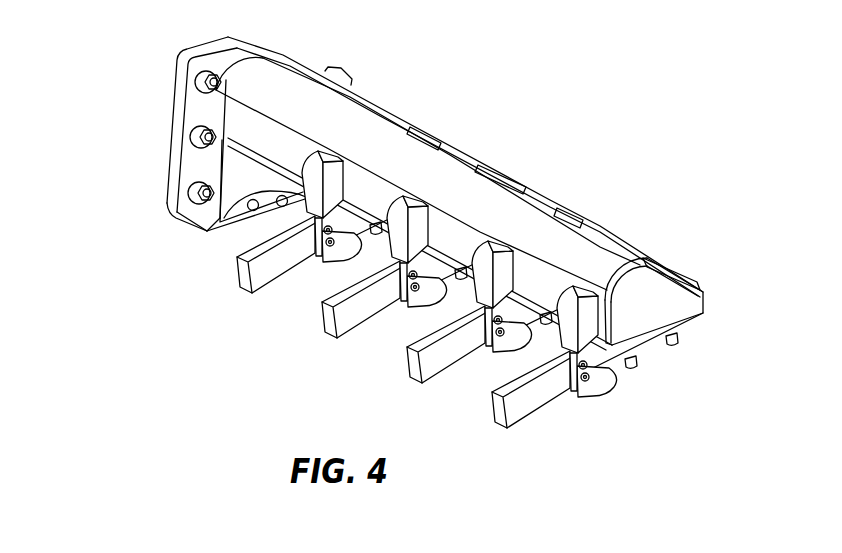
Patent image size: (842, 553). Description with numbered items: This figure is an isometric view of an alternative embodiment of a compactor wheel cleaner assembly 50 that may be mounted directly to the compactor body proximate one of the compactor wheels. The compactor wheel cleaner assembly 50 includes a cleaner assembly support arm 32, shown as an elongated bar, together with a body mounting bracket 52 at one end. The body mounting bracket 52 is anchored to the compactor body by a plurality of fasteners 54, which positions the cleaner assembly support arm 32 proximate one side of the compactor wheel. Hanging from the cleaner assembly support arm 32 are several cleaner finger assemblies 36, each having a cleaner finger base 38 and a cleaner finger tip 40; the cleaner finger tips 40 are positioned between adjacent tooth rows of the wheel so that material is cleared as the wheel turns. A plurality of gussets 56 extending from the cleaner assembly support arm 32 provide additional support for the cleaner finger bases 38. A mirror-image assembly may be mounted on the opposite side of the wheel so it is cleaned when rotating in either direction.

The cleaner assembly support arm 32 is at (607, 253).
The cleaner finger assemblies 36 is at (703, 313).
The cleaner finger bases 38 is at (345, 261).
The cleaner finger tips 40 is at (263, 278).
The compactor wheel cleaner assembly 50 is at (573, 84).
The body mounting bracket 52 is at (250, 50).
The fasteners 54 is at (205, 181).
The gussets 56 is at (398, 217).